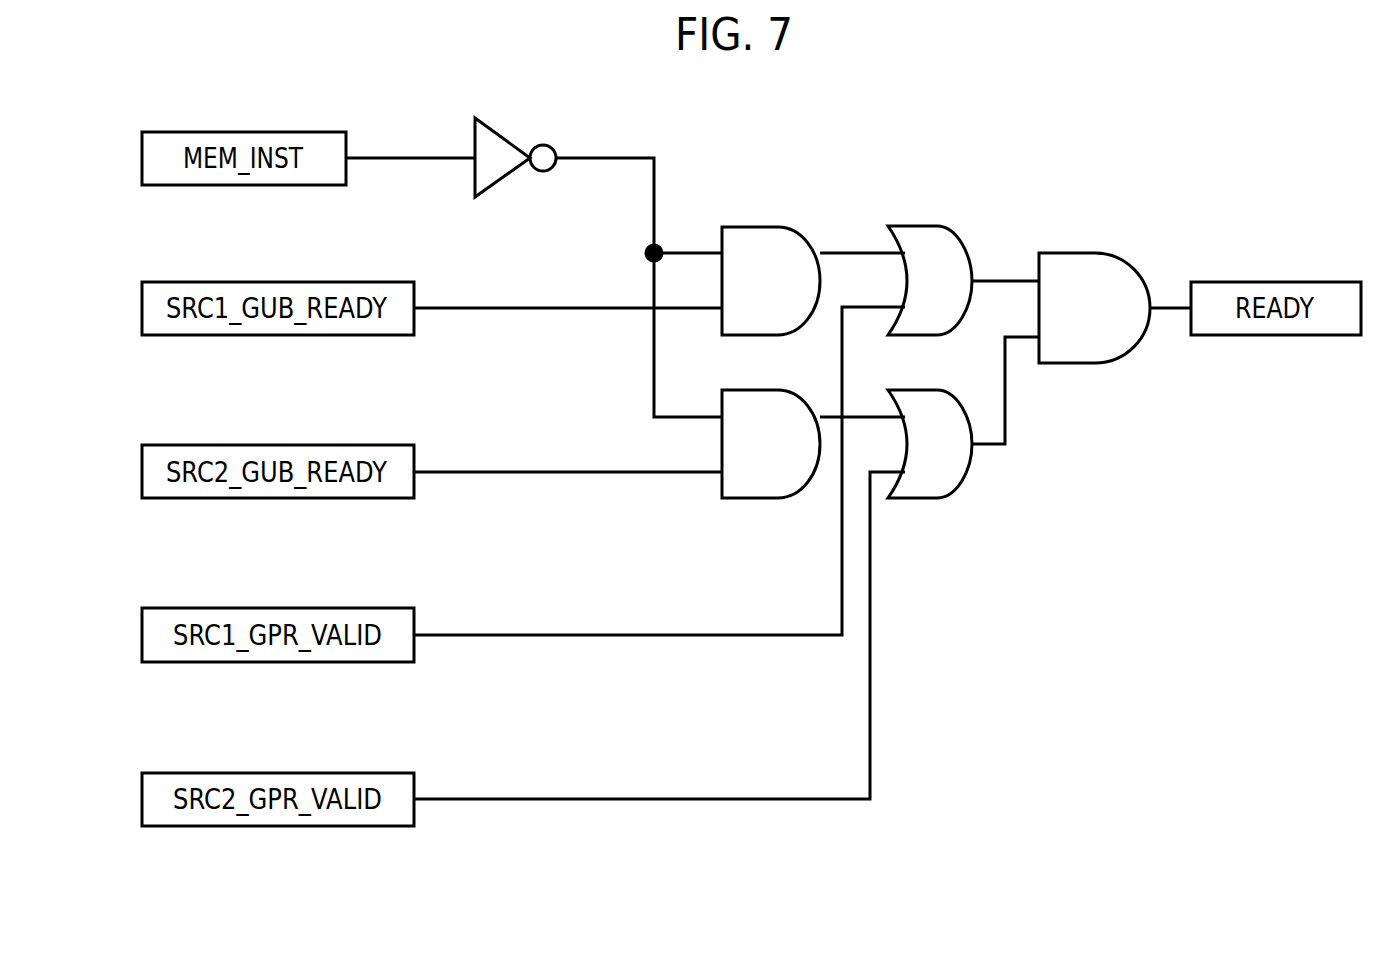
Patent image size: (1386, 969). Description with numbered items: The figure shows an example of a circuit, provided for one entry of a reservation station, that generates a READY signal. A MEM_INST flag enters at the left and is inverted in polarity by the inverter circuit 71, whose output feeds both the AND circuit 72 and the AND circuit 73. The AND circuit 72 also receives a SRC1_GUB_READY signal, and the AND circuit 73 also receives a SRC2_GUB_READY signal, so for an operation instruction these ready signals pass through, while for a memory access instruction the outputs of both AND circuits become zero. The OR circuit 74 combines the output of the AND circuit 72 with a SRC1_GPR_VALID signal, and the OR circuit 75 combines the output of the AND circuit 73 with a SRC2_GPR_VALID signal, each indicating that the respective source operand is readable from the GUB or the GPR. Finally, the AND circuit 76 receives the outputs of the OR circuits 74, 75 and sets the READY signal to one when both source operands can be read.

The inverter circuit 71 is at (493, 123).
The AND circuit 72 is at (750, 223).
The AND circuit 73 is at (750, 500).
The OR circuit 74 is at (922, 223).
The OR circuit 75 is at (923, 500).
The AND circuit 76 is at (1066, 252).